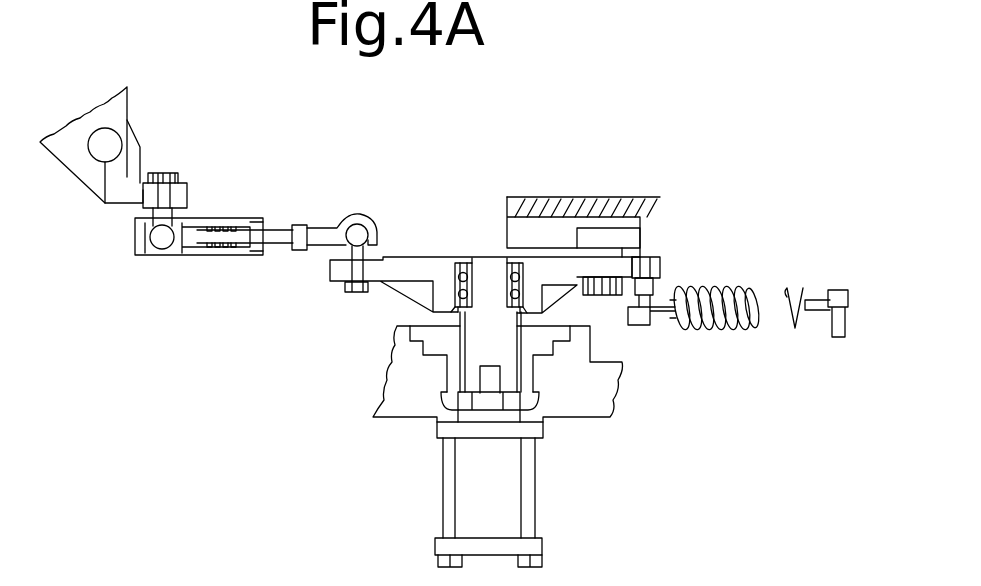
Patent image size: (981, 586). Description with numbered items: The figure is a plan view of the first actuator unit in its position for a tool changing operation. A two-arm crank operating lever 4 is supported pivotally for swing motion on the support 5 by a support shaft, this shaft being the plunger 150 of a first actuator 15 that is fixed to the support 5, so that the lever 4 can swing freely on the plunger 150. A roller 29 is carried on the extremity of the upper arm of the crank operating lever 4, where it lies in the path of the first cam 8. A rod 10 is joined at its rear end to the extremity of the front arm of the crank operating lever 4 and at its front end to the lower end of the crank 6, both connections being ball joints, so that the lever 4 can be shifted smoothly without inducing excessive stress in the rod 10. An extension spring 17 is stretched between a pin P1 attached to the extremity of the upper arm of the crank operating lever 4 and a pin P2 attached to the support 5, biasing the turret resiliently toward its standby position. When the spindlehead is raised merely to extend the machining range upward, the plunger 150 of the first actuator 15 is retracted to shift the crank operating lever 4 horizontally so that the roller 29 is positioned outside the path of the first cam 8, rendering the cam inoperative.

The crank operating lever 4 is at (382, 273).
The support 5 is at (587, 407).
The crank 6 is at (190, 190).
The first cam 8 is at (520, 235).
The rod 10 is at (281, 236).
The first actuator 15 is at (517, 497).
The extension spring 17 is at (723, 330).
The roller 29 is at (643, 243).
The plunger 150 is at (472, 350).
The pin P1 is at (642, 317).
The pin P2 is at (824, 293).